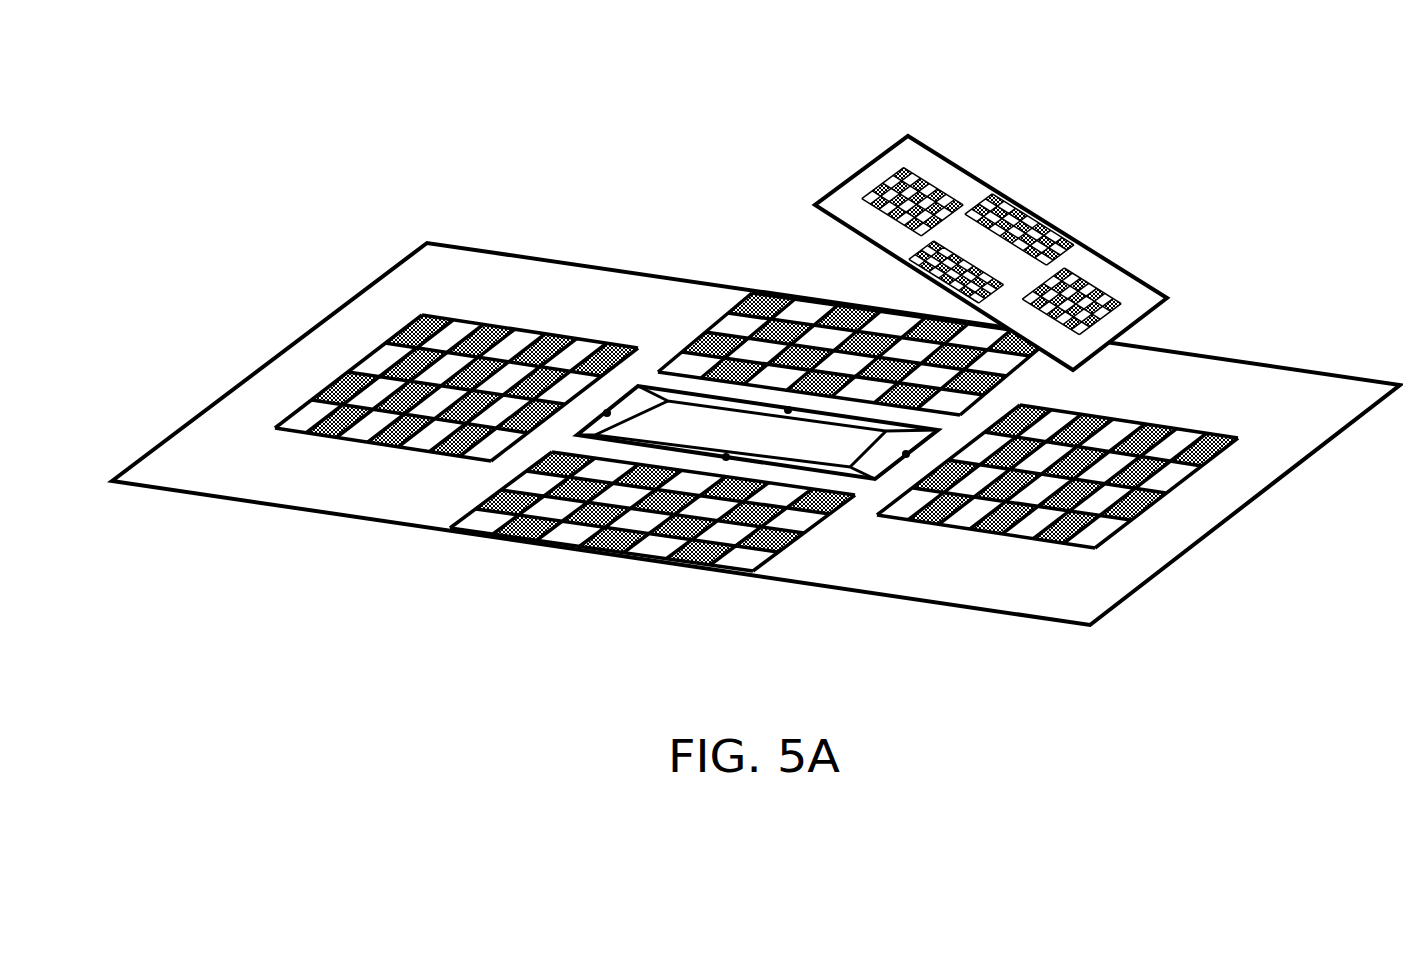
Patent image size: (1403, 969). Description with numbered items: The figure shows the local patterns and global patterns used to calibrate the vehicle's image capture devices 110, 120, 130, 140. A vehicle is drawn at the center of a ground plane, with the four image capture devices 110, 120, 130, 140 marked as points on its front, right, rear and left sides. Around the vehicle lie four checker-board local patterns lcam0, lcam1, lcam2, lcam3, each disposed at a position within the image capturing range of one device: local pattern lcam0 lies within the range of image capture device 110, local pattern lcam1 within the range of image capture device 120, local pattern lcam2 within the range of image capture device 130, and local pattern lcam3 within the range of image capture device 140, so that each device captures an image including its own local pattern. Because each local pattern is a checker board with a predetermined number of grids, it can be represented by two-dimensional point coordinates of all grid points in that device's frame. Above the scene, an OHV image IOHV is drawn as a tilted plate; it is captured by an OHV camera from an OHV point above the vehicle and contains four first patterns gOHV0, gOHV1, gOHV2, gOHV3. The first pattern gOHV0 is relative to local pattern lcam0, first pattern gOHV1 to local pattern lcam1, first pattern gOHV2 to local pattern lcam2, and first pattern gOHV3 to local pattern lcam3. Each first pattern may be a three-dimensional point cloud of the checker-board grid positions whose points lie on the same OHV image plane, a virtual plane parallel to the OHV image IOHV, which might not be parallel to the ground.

The image capture device 110 is at (607, 413).
The image capture device 120 is at (906, 455).
The image capture device 130 is at (788, 410).
The image capture device 140 is at (726, 457).
The local pattern lcam0 is at (392, 337).
The local pattern lcam1 is at (1128, 525).
The local pattern lcam2 is at (712, 330).
The local pattern lcam3 is at (483, 501).
The OHV image IOHV is at (908, 136).
The first pattern gOHV0 is at (882, 182).
The first pattern gOHV1 is at (1092, 283).
The first pattern gOHV2 is at (985, 197).
The first pattern gOHV3 is at (900, 252).